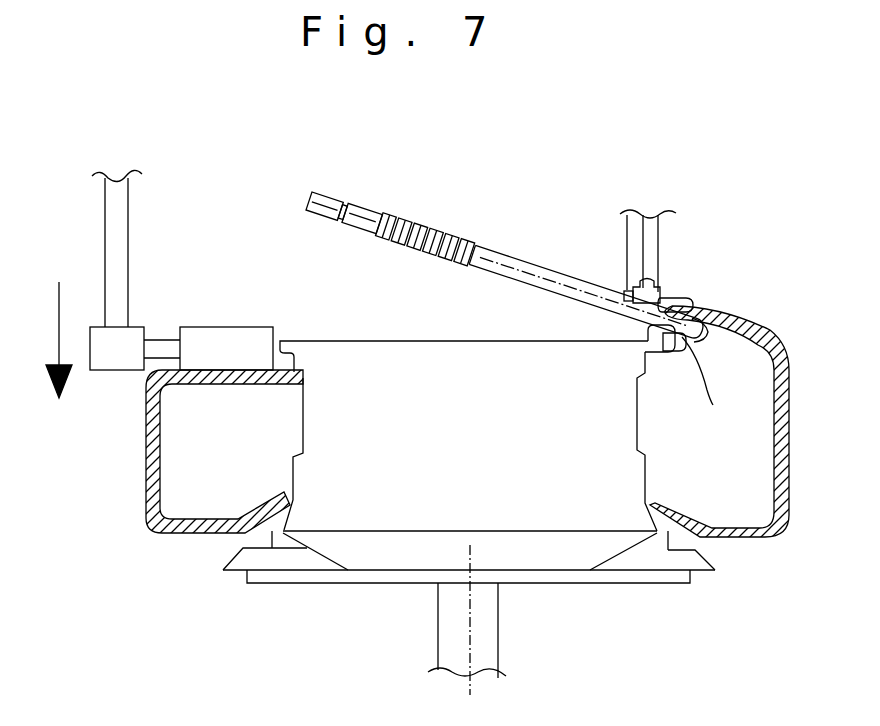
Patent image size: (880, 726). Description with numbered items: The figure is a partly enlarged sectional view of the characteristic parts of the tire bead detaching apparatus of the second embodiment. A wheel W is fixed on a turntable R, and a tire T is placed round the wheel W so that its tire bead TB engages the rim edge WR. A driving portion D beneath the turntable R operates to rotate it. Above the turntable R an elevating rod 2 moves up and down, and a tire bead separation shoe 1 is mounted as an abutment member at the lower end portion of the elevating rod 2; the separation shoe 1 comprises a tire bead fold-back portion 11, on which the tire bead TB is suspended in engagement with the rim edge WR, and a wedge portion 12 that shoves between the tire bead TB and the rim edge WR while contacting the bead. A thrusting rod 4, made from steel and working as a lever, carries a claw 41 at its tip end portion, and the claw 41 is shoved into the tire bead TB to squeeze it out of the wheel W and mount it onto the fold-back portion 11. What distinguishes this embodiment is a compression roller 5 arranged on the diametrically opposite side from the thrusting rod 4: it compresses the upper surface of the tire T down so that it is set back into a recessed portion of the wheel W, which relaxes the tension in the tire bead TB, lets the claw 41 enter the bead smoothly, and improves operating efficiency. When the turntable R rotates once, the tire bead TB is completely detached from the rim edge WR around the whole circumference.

The compression roller 5 is at (113, 201).
The tire T is at (146, 428).
The wheel W is at (372, 355).
The rim edge WR is at (647, 340).
The turntable R is at (694, 566).
The driving portion D is at (488, 607).
The thrusting rod 4 is at (514, 262).
The claw 41 is at (706, 327).
The elevating rod 2 is at (650, 242).
The tire bead separation shoe 1 is at (628, 291).
The tire bead fold-back portion 11 is at (685, 302).
The wedge portion 12 is at (684, 338).
The tire bead TB is at (680, 298).